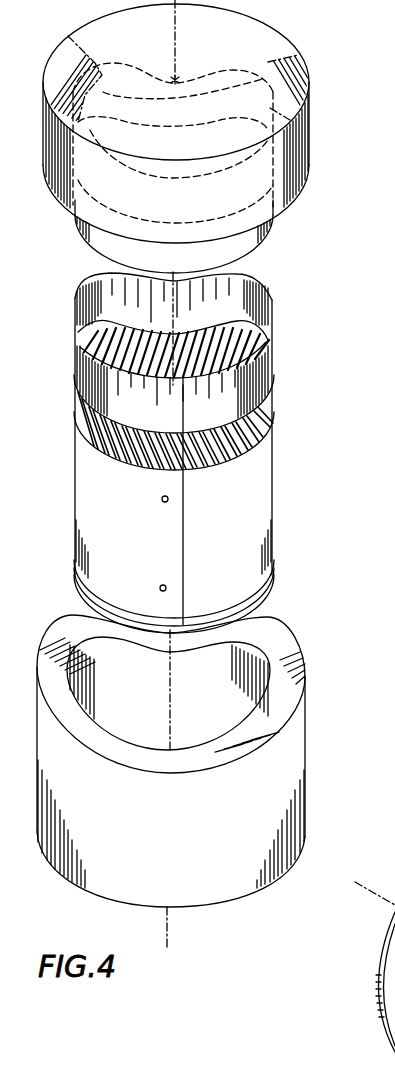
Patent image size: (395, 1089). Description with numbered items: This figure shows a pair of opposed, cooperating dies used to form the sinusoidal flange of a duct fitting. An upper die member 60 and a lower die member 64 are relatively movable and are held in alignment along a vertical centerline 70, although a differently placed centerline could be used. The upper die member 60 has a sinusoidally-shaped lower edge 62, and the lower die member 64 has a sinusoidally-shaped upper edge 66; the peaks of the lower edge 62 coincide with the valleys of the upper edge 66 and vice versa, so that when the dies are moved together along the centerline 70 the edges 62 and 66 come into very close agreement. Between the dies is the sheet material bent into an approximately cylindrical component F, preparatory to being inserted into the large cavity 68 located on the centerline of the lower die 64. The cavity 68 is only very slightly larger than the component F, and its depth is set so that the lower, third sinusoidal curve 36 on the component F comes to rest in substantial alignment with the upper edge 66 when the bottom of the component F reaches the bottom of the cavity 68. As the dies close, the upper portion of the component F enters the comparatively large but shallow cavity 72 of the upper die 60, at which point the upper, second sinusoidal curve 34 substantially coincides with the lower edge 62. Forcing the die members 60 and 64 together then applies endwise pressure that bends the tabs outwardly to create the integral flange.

The second sinusoidal curve 34 is at (247, 403).
The third sinusoidal curve 36 is at (252, 448).
The component F is at (248, 528).
The upper die member 60 is at (283, 53).
The sinusoidally-shaped lower edge 62 is at (288, 194).
The lower die member 64 is at (273, 767).
The sinusoidally-shaped upper edge 66 is at (282, 645).
The cavity 68 is at (220, 692).
The centerline 70 is at (187, 477).
The cavity 72 is at (262, 168).